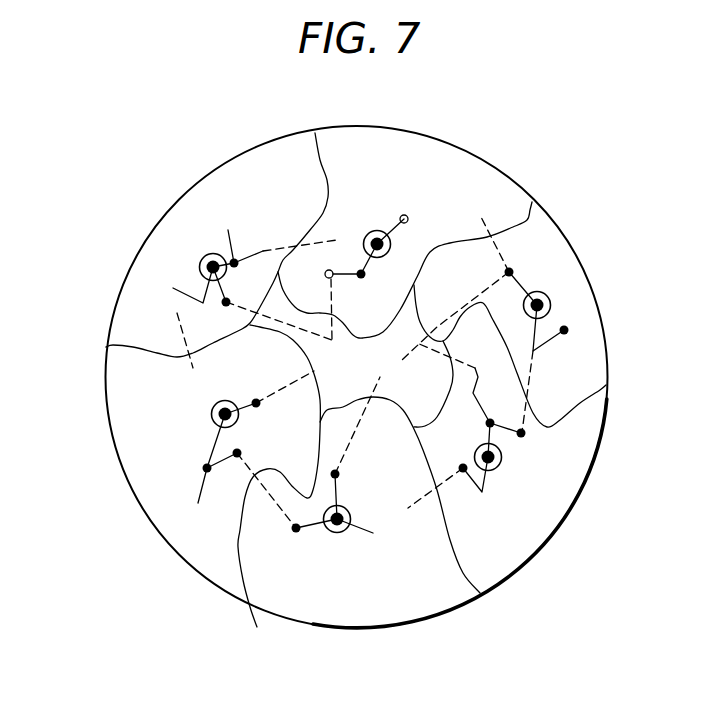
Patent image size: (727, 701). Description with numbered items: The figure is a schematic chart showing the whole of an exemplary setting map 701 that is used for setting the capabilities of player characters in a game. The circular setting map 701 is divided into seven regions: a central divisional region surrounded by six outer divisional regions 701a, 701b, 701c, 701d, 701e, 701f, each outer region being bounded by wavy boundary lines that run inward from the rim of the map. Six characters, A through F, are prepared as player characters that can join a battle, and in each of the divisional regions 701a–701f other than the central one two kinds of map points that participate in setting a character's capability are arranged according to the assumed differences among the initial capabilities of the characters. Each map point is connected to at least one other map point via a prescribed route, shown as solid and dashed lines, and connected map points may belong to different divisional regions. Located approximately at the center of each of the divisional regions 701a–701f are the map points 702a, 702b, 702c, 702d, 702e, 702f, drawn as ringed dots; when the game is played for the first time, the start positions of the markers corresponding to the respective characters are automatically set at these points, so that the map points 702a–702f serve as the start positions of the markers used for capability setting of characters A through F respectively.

The setting map 701 is at (272, 137).
The divisional region 701a is at (143, 275).
The divisional region 701b is at (493, 193).
The divisional region 701c is at (563, 267).
The divisional region 701d is at (582, 452).
The divisional region 701e is at (402, 547).
The divisional region 701f is at (145, 478).
The map point 702a is at (212, 252).
The map point 702b is at (378, 229).
The map point 702c is at (549, 303).
The map point 702d is at (490, 470).
The map point 702e is at (337, 532).
The map point 702f is at (211, 415).